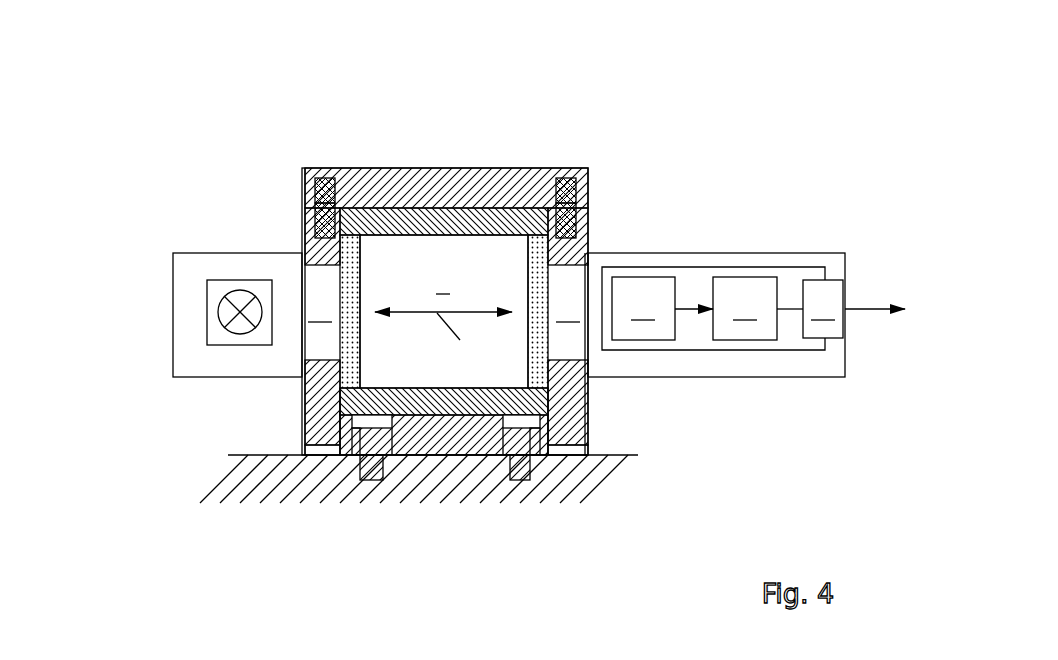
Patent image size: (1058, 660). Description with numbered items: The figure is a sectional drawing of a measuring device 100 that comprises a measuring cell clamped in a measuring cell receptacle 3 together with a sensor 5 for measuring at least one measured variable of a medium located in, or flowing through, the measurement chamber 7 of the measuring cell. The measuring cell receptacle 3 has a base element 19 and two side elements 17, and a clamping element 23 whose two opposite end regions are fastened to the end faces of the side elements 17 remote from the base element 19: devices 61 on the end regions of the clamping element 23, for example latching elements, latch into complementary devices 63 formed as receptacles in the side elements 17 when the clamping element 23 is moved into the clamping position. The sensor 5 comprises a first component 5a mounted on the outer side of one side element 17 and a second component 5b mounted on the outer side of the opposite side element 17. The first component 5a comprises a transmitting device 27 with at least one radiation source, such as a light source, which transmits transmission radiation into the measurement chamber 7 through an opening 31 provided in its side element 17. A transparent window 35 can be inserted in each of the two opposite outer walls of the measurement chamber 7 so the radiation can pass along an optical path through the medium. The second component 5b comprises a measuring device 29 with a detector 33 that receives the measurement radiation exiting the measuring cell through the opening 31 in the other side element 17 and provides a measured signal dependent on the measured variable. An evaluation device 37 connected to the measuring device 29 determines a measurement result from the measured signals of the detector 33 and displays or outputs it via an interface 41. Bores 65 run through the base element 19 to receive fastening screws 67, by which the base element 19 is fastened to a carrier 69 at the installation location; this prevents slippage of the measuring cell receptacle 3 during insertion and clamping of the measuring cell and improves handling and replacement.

The measuring device 100 is at (178, 177).
The sensor 5 is at (342, 67).
The first component 5a is at (253, 218).
The second component 5b is at (679, 218).
The transmitting device 27 is at (222, 308).
The measuring device 29 is at (753, 278).
The detector 33 is at (643, 308).
The evaluation device 37 is at (745, 308).
The interface 41 is at (823, 309).
The clamping element 23 is at (425, 170).
The opening 31 is at (443, 311).
The side element 17 is at (316, 258).
The transparent window 35 is at (350, 325).
The measurement chamber 7 is at (444, 311).
The device 61 is at (325, 185).
The complementary device 63 is at (332, 205).
The base element 19 is at (457, 445).
The bore 65 is at (385, 450).
The fastening screw 67 is at (365, 445).
The carrier 69 is at (237, 456).
The measuring cell receptacle 3 is at (298, 402).